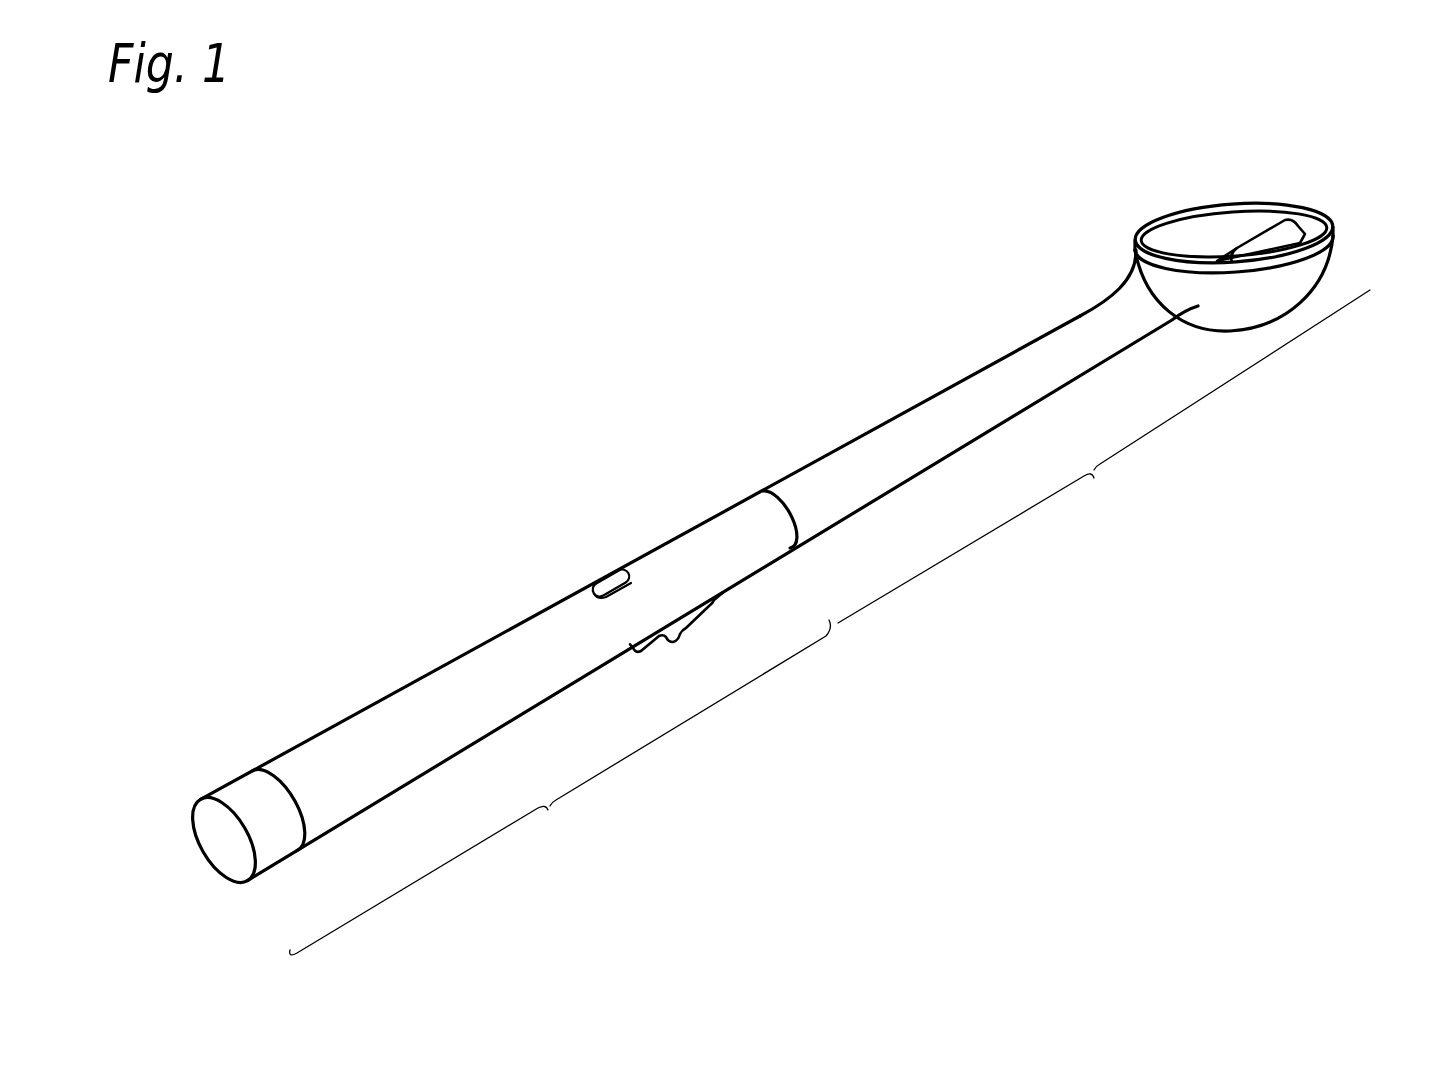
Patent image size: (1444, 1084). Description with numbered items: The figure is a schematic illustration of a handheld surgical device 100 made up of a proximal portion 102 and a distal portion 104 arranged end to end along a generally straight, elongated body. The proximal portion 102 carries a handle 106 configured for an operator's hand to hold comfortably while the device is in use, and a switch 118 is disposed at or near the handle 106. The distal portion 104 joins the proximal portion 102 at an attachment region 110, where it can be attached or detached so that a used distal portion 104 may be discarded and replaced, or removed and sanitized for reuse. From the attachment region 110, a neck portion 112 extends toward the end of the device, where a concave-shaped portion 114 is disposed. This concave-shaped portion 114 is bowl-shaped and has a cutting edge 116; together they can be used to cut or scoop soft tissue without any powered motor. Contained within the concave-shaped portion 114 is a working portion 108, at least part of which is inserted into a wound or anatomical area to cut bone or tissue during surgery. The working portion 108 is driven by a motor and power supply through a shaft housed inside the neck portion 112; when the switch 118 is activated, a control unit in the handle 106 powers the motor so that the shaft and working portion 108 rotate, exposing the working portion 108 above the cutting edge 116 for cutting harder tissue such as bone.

The handheld surgical device 100 is at (694, 188).
The proximal portion 102 is at (548, 810).
The distal portion 104 is at (1094, 478).
The handle 106 is at (407, 687).
The working portion 108 is at (1296, 236).
The attachment region 110 is at (770, 491).
The neck portion 112 is at (1020, 348).
The concave-shaped portion 114 is at (1327, 266).
The cutting edge 116 is at (1167, 218).
The switch 118 is at (669, 642).